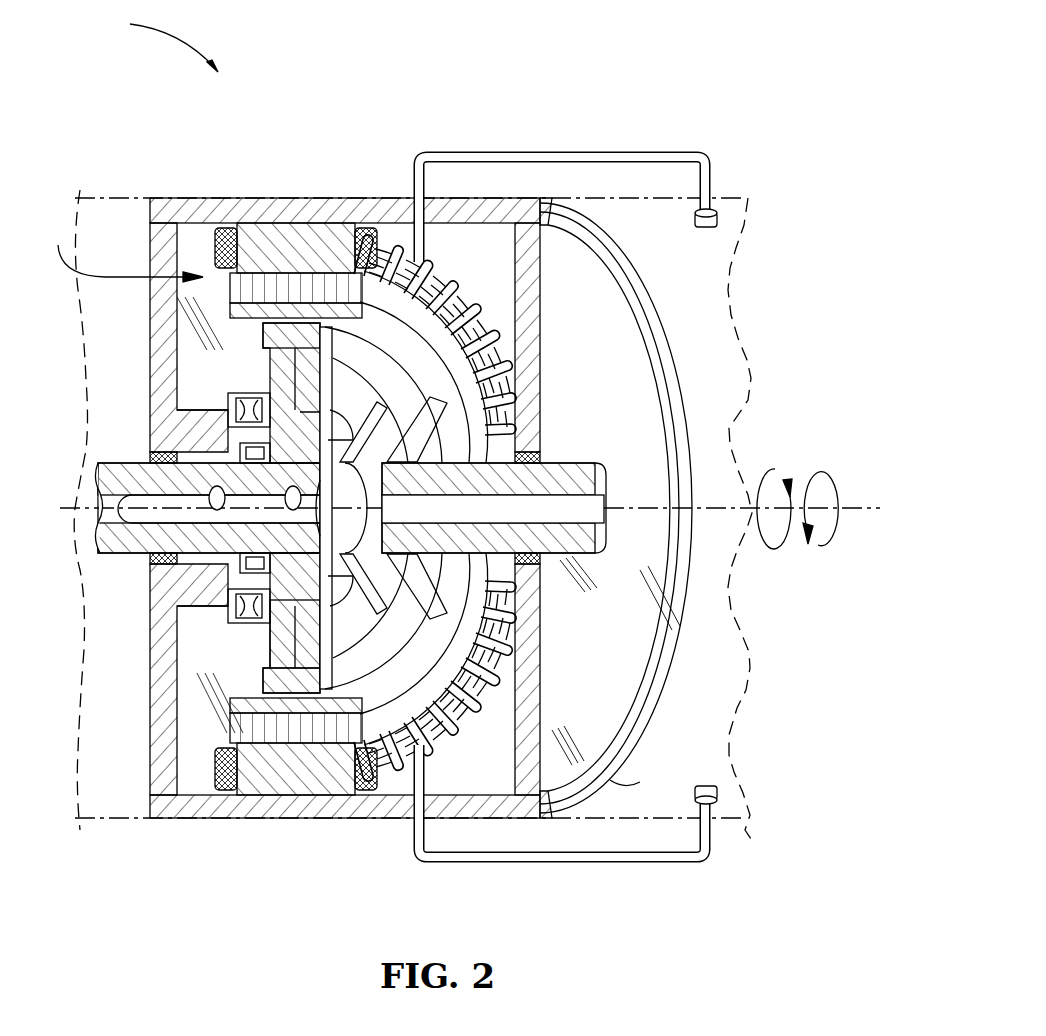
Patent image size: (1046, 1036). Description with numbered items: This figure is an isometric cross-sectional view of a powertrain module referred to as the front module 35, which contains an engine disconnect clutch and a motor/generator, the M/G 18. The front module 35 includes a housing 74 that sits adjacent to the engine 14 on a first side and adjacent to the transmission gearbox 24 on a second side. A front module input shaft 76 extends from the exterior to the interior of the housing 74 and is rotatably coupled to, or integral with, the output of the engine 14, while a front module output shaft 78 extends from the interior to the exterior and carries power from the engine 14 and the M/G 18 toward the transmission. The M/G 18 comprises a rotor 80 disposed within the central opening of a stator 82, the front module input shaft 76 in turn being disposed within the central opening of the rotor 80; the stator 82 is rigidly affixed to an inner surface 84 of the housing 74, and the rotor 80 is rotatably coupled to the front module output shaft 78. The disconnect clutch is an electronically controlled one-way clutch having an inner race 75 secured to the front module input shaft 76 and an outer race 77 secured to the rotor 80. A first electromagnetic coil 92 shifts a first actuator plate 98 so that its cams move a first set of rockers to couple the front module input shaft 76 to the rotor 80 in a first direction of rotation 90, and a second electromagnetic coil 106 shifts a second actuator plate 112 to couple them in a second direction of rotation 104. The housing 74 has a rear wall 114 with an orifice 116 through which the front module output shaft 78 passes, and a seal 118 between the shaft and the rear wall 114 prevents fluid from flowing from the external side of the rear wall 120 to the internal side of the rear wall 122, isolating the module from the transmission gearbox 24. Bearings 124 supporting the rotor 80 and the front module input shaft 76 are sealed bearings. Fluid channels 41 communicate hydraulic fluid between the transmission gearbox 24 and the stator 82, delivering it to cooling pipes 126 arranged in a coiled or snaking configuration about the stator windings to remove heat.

The engine 14 is at (100, 197).
The M/G 18 is at (125, 251).
The transmission gearbox 24 is at (758, 832).
The front module 35 is at (162, 42).
The fluid channels 41 is at (563, 152).
The housing 74 is at (318, 830).
The inner race 75 is at (300, 690).
The front module input shaft 76 is at (153, 460).
The outer race 77 is at (300, 680).
The front module output shaft 78 is at (592, 565).
The rotor 80 is at (232, 287).
The stator 82 is at (222, 232).
The inner surface 84 is at (208, 790).
The first direction of rotation 90 is at (773, 468).
The first electromagnetic coil 92 is at (307, 640).
The first actuator plate 98 is at (440, 382).
The second direction of rotation 104 is at (820, 473).
The second electromagnetic coil 106 is at (270, 640).
The second actuator plate 112 is at (262, 345).
The rear wall 114 is at (607, 400).
The orifice 116 is at (572, 462).
The seal 118 is at (530, 460).
The external side of the rear wall 120 is at (632, 780).
The internal side of the rear wall 122 is at (503, 770).
The bearings 124 is at (235, 610).
The cooling pipes 126 is at (494, 318).